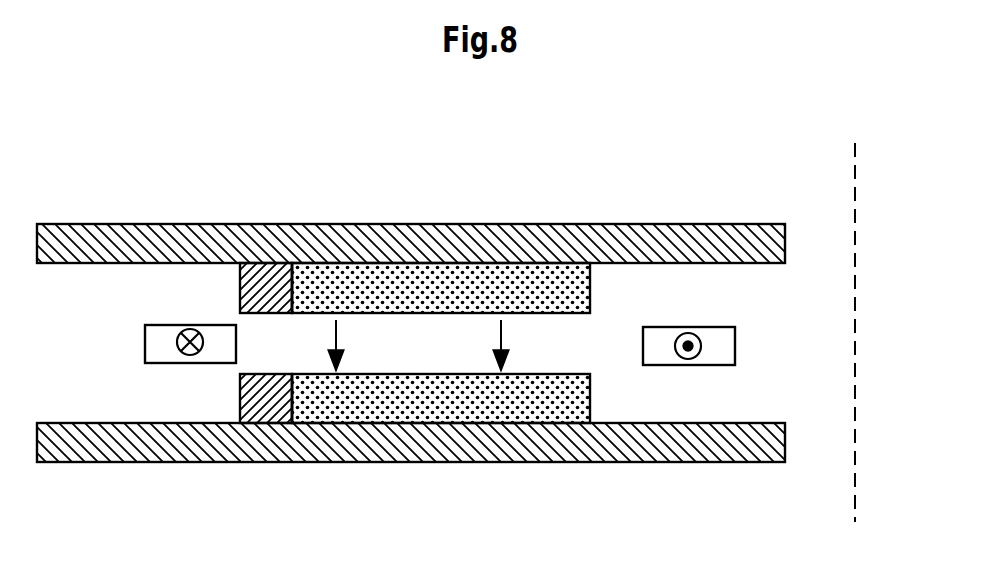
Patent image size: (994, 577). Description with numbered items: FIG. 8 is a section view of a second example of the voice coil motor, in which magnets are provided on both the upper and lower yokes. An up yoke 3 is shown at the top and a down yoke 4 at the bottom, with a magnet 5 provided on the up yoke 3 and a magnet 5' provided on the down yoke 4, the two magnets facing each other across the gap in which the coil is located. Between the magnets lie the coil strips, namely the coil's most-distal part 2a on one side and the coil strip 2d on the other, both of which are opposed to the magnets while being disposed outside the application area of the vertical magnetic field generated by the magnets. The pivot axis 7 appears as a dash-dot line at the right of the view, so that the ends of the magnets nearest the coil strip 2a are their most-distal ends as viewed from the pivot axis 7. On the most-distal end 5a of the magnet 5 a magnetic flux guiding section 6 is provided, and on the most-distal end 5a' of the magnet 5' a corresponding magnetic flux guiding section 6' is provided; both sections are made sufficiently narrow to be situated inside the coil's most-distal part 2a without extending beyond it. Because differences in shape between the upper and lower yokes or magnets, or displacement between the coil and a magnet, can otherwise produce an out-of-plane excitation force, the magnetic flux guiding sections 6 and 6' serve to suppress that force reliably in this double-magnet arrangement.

The up yoke 3 is at (118, 238).
The down yoke 4 is at (118, 462).
The magnet 5 is at (441, 230).
The most-distal end of the magnet 5a is at (328, 227).
The magnet 5' is at (441, 465).
The most-distal end of the magnet 5a' is at (329, 465).
The magnetic flux guiding section 6 is at (257, 227).
The magnetic flux guiding section 6' is at (266, 465).
The coil strip (coil's most-distal part) 2a is at (145, 344).
The coil strip 2d is at (720, 348).
The pivot axis 7 is at (855, 217).